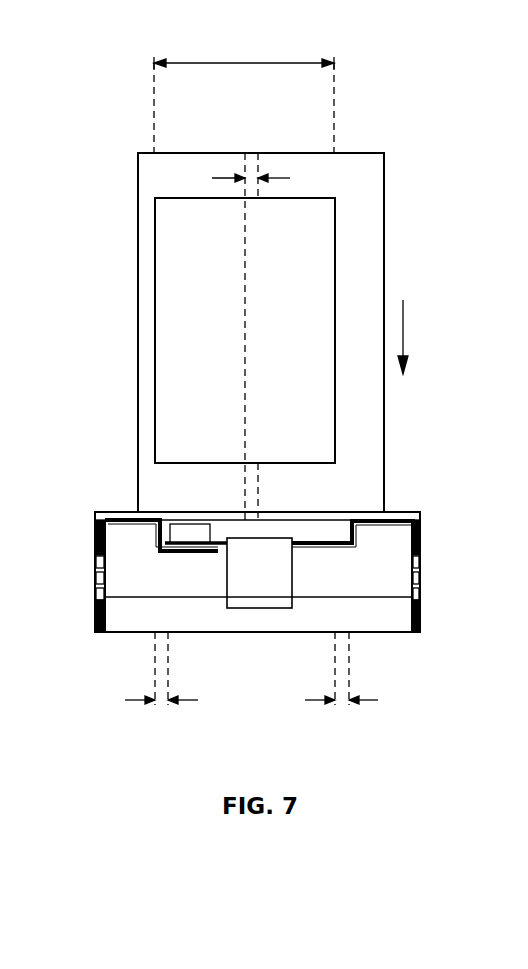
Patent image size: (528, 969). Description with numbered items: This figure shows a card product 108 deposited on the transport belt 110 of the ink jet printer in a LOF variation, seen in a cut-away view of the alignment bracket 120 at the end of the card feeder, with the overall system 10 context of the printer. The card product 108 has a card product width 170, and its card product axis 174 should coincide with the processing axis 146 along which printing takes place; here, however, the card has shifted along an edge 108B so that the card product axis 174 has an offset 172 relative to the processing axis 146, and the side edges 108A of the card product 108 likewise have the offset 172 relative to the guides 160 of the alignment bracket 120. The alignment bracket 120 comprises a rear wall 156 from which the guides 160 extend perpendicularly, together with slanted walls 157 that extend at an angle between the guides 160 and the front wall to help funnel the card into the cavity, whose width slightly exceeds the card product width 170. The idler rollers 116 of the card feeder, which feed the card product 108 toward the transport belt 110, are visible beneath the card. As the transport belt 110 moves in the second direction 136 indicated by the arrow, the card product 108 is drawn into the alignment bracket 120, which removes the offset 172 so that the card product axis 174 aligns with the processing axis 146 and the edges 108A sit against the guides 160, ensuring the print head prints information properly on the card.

The system 10 is at (456, 377).
The card product 108 is at (314, 374).
The edges of the card product 108A is at (155, 418).
The edge of the card product 108B is at (212, 463).
The transport belt 110 is at (370, 186).
The idler rollers 116 is at (280, 592).
The alignment bracket 120 is at (425, 590).
The second direction 136 is at (403, 340).
The processing axis 146 is at (256, 166).
The rear wall 156 is at (175, 543).
The slanted wall 157 is at (471, 540).
The guides 160 is at (173, 527).
The card product width 170 is at (247, 62).
The offset 172 is at (238, 172).
The card product axis 174 is at (243, 333).